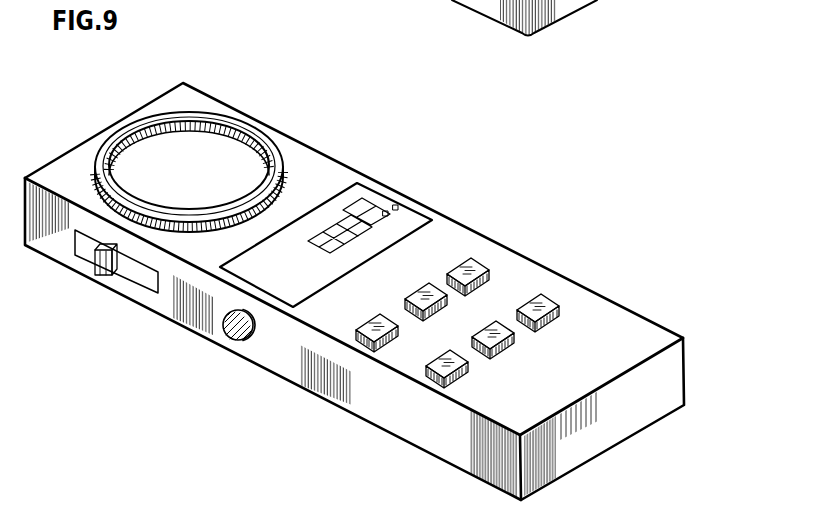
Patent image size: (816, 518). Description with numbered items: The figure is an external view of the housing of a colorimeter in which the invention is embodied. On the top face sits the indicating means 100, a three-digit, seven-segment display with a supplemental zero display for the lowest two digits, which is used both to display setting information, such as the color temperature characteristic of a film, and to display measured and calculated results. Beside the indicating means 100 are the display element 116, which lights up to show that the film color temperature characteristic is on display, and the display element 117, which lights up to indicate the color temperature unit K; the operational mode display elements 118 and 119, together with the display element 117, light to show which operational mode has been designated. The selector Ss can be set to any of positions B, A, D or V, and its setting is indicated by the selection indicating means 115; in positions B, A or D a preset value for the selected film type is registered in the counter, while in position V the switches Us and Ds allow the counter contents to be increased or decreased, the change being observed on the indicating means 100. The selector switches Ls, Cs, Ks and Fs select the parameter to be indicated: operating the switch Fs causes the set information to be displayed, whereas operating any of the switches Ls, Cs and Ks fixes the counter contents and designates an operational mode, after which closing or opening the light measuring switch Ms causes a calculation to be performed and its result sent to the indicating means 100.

The indicating means 100 is at (340, 210).
The selection indicating means 115 is at (307, 259).
The display element 117 is at (368, 196).
The display element 116 is at (220, 268).
The operational mode display element 118 is at (250, 280).
The operational mode display element 119 is at (282, 296).
The selector Ss is at (102, 276).
The light measuring switch Ms is at (239, 341).
The selector switch Fs is at (368, 345).
The selector switch Ls is at (421, 313).
The selector switch Cs is at (477, 266).
The selector switch Ks is at (472, 366).
The switch Us is at (516, 341).
The switch Ds is at (561, 313).